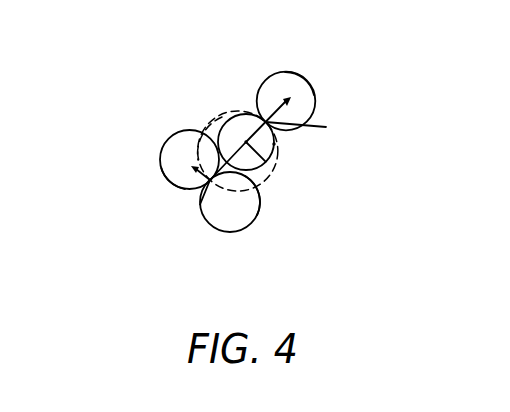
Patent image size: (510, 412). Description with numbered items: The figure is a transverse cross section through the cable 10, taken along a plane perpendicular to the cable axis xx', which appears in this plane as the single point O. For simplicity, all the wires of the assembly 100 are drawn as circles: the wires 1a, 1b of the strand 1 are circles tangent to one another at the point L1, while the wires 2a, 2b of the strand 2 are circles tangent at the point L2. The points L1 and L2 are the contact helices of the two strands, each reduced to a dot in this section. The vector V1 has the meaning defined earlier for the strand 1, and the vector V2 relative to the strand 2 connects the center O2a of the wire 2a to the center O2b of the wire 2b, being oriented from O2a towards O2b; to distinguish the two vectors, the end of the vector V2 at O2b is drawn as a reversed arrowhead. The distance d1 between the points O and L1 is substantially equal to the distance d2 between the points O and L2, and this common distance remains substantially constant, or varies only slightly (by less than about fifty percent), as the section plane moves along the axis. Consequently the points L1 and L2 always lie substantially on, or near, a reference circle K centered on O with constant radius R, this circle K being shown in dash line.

The cable 10 is at (188, 74).
The assembly 100 is at (165, 137).
The strand 1 is at (227, 233).
The wire 1a is at (257, 215).
The wire 1b is at (163, 168).
The strand 2 is at (273, 73).
The wire 2a is at (222, 117).
The wire 2b is at (285, 73).
The reference circle K is at (267, 185).
The radius R is at (246, 142).
The point O is at (234, 136).
The distance d1 is at (231, 161).
The distance d2 is at (247, 127).
The contact helix L1 is at (200, 206).
The contact helix L2 is at (306, 131).
The vector V1 is at (190, 175).
The vector V2 is at (274, 105).
The center O2a is at (276, 144).
The center O2b is at (296, 104).